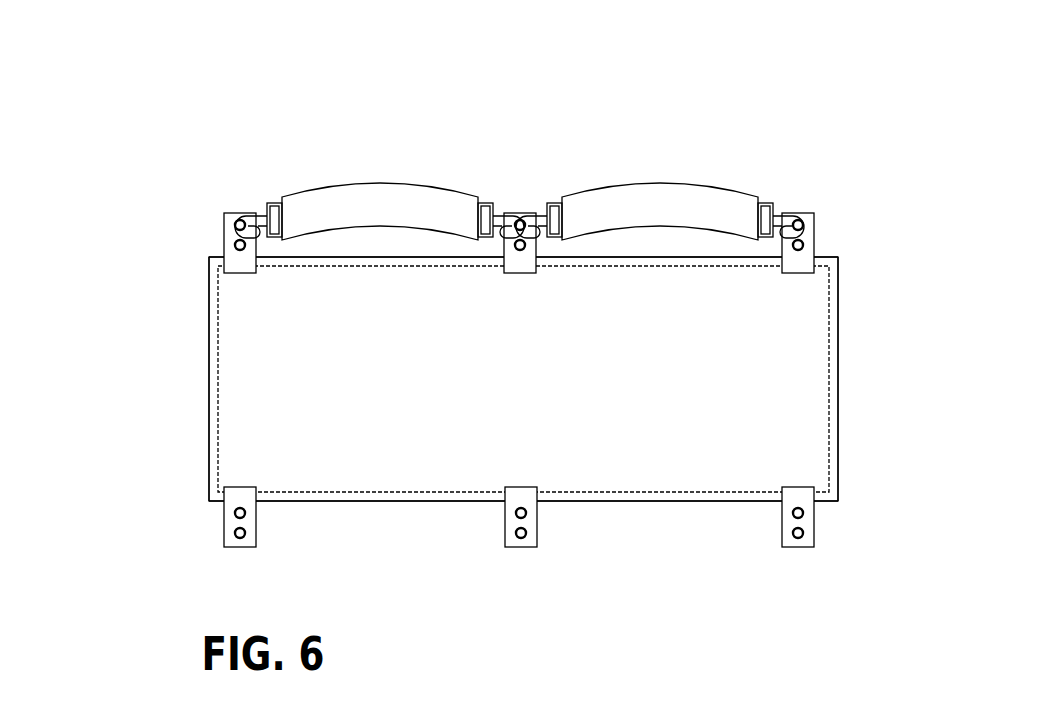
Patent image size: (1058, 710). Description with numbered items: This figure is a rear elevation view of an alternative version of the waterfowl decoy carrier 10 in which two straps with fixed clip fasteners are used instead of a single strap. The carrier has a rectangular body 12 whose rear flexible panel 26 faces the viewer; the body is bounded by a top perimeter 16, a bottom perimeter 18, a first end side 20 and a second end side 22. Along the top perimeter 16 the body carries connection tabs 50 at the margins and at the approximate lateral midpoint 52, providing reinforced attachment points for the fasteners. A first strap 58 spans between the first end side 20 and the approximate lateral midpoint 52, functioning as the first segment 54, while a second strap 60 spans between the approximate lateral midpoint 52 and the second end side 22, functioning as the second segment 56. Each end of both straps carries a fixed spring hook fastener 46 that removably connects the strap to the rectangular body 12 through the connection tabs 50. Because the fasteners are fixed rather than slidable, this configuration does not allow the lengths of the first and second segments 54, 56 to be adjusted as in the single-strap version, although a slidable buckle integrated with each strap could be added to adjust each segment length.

The waterfowl decoy carrier 10 is at (852, 218).
The rectangular body 12 is at (208, 388).
The top perimeter 16 is at (392, 257).
The bottom perimeter 18 is at (600, 502).
The first end side 20 is at (208, 433).
The second end side 22 is at (840, 368).
The rear flexible panel 26 is at (250, 373).
The spring hook fastener 46 is at (238, 214).
The connection tabs 50 is at (222, 222).
The approximate lateral midpoint 52 is at (518, 282).
The first segment 54 is at (312, 190).
The second segment 56 is at (722, 186).
The first strap 58 is at (402, 173).
The second strap 60 is at (700, 175).